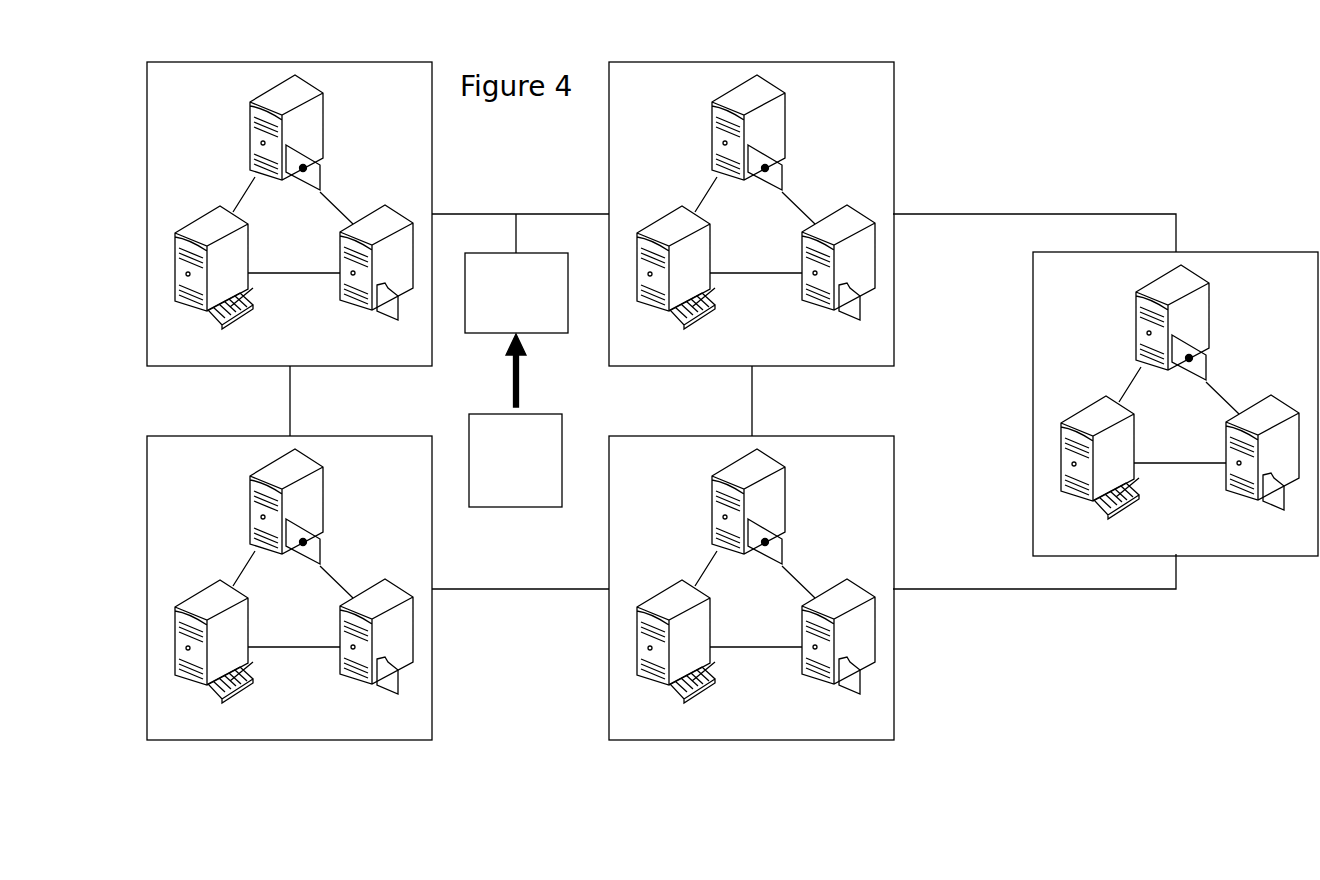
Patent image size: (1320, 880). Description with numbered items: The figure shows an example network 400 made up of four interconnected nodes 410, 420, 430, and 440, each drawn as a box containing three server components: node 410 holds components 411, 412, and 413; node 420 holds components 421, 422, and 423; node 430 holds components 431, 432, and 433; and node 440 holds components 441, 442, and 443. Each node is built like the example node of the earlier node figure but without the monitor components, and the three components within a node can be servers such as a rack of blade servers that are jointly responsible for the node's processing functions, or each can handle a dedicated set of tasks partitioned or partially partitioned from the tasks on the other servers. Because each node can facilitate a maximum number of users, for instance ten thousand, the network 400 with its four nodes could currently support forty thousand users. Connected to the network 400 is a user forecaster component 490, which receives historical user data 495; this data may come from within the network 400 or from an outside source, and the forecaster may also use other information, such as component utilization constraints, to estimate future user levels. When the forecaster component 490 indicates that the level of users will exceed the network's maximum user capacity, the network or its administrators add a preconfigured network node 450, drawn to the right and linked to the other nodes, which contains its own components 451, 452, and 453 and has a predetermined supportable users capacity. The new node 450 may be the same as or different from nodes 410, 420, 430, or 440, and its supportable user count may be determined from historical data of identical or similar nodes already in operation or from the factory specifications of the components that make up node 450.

The network 400 is at (733, 457).
The node 410 is at (289, 214).
The component 411 is at (376, 273).
The component 412 is at (214, 274).
The component 413 is at (286, 143).
The node 420 is at (289, 588).
The component 421 is at (376, 647).
The component 422 is at (214, 648).
The component 423 is at (286, 517).
The node 430 is at (751, 588).
The component 431 is at (838, 647).
The component 432 is at (676, 648).
The component 433 is at (748, 517).
The node 440 is at (751, 214).
The component 441 is at (838, 273).
The component 442 is at (676, 274).
The component 443 is at (748, 143).
The preconfigured network node 450 is at (1175, 404).
The component 451 is at (1262, 463).
The component 452 is at (1100, 464).
The component 453 is at (1172, 333).
The user forecaster component 490 is at (516, 293).
The historical user data 495 is at (515, 420).